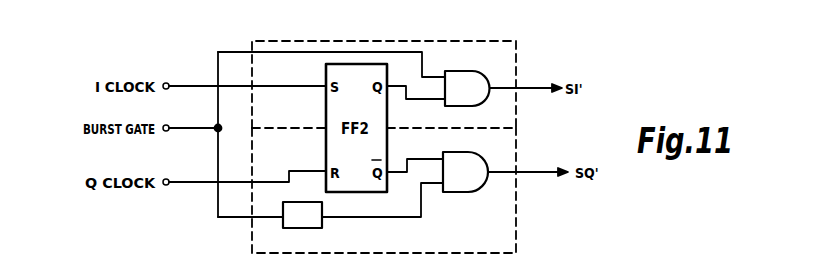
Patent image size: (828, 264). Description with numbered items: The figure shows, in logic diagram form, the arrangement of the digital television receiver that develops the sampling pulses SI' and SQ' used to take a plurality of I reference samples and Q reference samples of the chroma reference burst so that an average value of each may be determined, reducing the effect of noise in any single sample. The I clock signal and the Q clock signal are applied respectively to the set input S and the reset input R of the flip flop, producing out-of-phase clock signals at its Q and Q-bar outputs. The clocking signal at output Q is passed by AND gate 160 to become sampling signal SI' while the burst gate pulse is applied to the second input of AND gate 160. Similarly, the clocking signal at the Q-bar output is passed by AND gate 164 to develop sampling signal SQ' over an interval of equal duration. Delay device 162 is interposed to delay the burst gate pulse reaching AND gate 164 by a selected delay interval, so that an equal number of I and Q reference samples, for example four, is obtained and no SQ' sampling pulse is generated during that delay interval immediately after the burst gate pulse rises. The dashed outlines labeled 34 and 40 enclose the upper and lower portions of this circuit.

The AND gate 160 is at (478, 71).
The AND gate 164 is at (470, 192).
The delay device 162 is at (322, 226).
The I-channel sampling circuit 34' 34 is at (518, 60).
The Q-channel sampling circuit 40' 40 is at (518, 228).